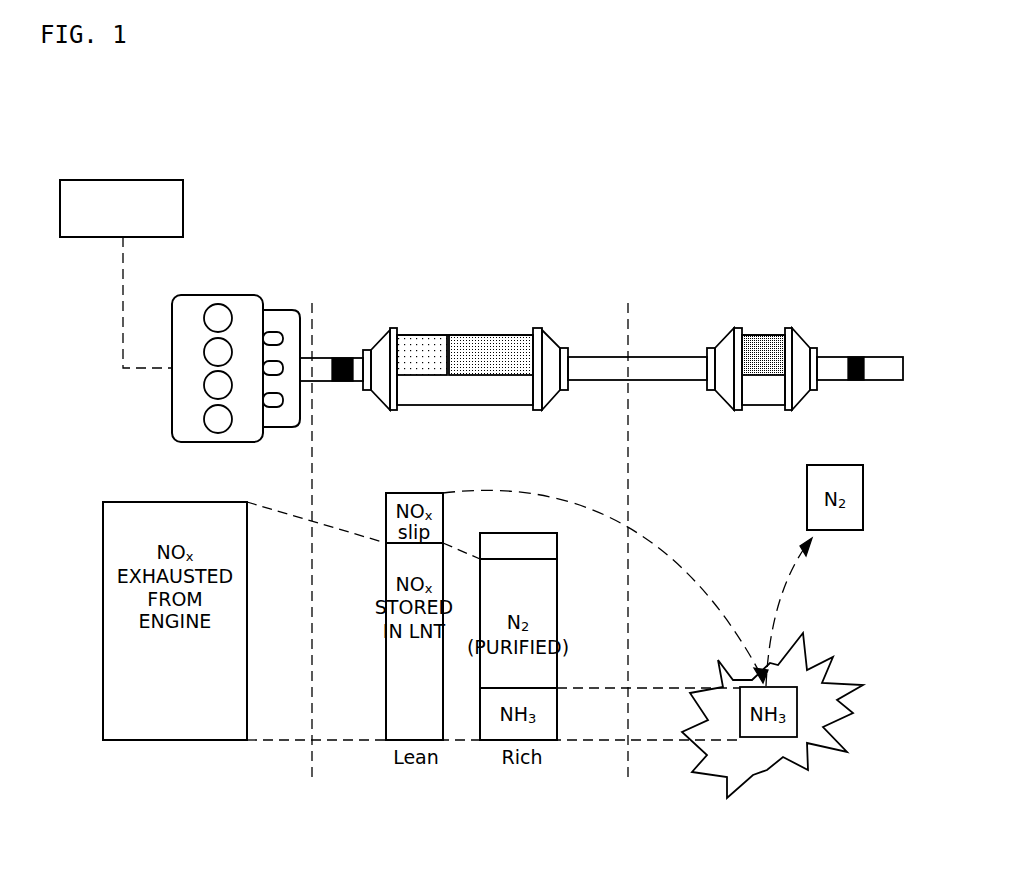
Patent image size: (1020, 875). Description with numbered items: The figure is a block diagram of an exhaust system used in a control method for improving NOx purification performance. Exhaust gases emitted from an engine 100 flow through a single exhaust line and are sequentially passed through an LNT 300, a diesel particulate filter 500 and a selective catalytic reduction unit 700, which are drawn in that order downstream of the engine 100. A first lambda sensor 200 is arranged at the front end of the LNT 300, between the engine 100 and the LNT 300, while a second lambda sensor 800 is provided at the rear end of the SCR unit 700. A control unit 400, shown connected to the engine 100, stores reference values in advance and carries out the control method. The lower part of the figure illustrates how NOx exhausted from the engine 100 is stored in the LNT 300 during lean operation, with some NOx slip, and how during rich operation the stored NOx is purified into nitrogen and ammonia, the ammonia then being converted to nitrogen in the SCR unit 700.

The engine 100 is at (225, 295).
The first lambda sensor 200 is at (339, 358).
The LNT 300 is at (422, 345).
The control unit 400 is at (137, 180).
The diesel particulate filter 500 is at (500, 345).
The selective catalytic reduction unit 700 is at (758, 340).
The second lambda sensor 800 is at (855, 357).